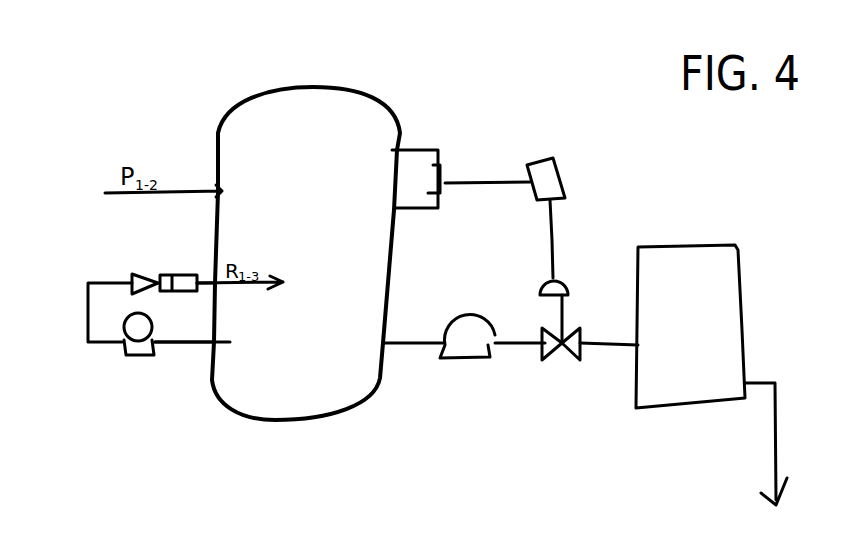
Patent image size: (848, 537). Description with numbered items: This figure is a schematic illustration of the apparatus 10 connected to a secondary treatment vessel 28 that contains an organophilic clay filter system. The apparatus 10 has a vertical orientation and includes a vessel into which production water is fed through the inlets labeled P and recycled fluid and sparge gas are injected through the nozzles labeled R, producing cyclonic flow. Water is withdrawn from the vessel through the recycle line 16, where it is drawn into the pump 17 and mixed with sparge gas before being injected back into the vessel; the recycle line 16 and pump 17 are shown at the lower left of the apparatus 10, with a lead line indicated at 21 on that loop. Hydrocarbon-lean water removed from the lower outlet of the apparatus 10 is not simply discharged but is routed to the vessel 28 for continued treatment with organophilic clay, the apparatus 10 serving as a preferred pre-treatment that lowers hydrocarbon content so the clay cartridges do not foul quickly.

The apparatus 10 is at (367, 61).
The recycle line 16 is at (183, 337).
The pump 17 is at (149, 318).
The recirculation loop 21 is at (88, 312).
The vessels 28 is at (700, 243).